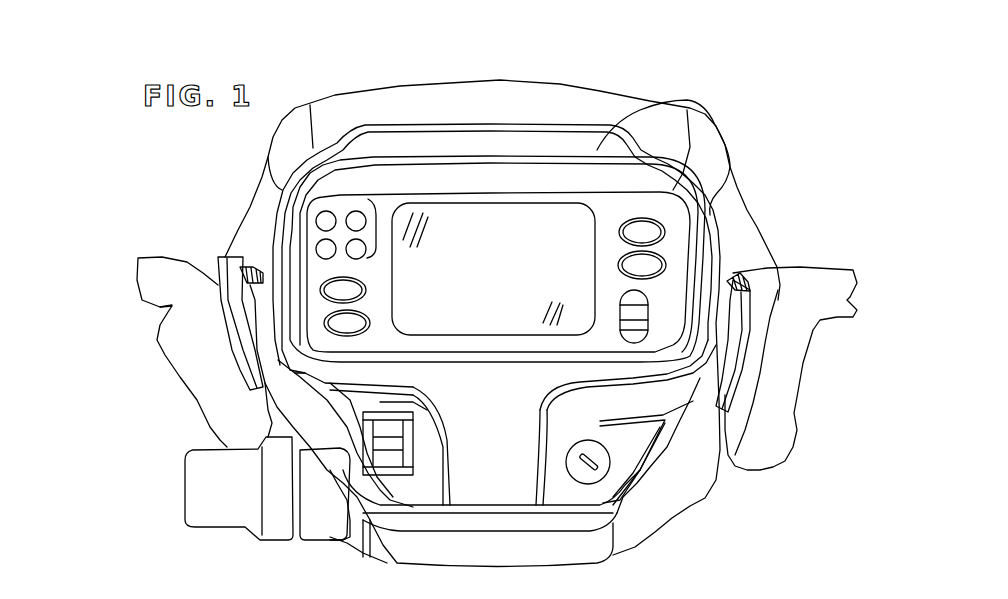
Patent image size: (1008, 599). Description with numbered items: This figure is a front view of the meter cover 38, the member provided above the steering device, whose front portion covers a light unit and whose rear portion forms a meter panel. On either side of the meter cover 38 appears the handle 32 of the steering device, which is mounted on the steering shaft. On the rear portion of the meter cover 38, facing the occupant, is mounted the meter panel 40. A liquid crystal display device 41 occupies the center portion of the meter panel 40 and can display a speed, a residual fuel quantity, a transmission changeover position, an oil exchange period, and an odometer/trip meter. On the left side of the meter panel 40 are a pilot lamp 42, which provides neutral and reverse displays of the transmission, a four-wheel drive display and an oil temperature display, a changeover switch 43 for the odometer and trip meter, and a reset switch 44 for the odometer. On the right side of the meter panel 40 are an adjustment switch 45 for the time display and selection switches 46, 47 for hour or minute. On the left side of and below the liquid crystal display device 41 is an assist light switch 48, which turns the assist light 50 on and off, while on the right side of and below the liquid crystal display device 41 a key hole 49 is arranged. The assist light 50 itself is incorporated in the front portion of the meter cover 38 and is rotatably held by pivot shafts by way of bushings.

The handle 32 is at (170, 340).
The meter cover 38 is at (562, 85).
The meter panel 40 is at (488, 190).
The liquid crystal display device 41 is at (533, 230).
The pilot lamp 42 is at (383, 225).
The changeover switch 43 is at (330, 290).
The reset switch 44 is at (333, 327).
The adjustment switch 45 is at (643, 310).
The selection switch 46 is at (647, 232).
The selection switch 47 is at (647, 263).
The assist light switch 48 is at (388, 455).
The key hole 49 is at (588, 467).
The assist light 50 is at (227, 517).